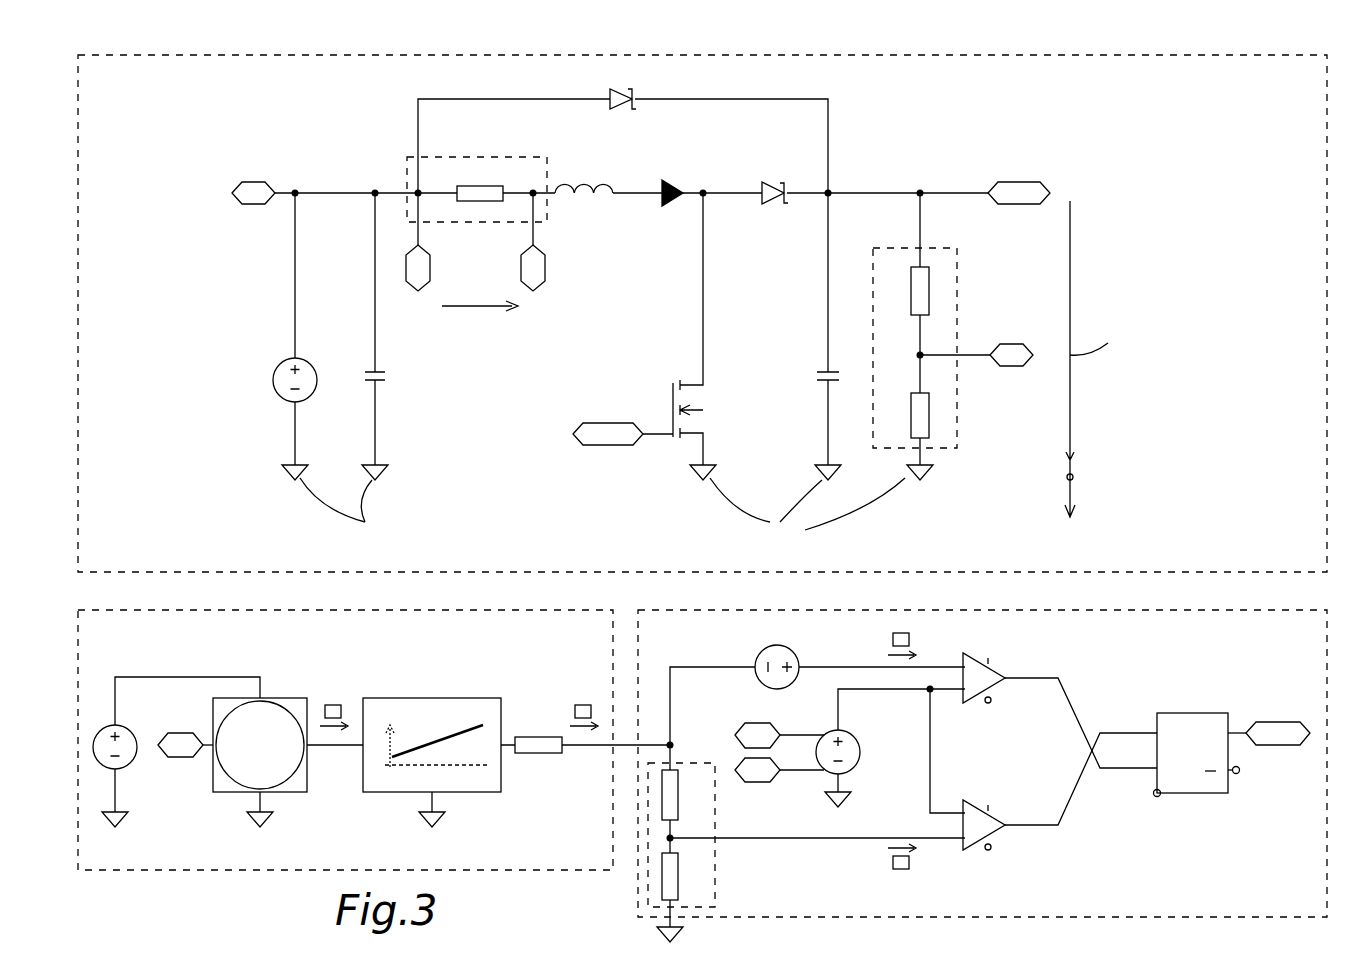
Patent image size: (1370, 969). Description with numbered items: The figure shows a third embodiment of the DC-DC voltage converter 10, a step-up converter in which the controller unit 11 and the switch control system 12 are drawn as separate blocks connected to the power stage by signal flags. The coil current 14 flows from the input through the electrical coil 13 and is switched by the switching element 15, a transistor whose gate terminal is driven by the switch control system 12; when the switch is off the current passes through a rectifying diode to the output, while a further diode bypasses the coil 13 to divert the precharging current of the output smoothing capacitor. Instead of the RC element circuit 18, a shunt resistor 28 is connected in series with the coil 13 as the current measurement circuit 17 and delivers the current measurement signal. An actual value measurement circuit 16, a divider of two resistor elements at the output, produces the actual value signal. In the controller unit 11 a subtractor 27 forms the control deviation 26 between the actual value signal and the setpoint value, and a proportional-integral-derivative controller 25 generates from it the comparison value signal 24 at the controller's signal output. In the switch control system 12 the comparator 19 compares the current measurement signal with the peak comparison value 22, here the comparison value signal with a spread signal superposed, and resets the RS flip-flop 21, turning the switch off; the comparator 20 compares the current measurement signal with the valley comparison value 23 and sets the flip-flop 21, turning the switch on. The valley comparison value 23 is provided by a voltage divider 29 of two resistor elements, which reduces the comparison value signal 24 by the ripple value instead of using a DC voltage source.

The DC-DC voltage converter 10 is at (1260, 572).
The controller unit 11 is at (455, 870).
The switch control system 12 is at (638, 880).
The electrical coil 13 is at (607, 182).
The coil current 14 is at (679, 183).
The switching element 15 is at (698, 384).
The actual value measurement circuit 16 is at (957, 275).
The current measurement circuit 17 is at (484, 204).
The RC element circuit 18 is at (386, 293).
The comparator 19 is at (1000, 668).
The comparator 20 is at (1003, 818).
The RS flip-flop 21 is at (1190, 713).
The peak comparison value 22 is at (893, 640).
The valley comparison value 23 is at (893, 862).
The comparison value signal 24 is at (578, 705).
The PID controller 25 is at (438, 698).
The control deviation 26 is at (336, 705).
The subtractor 27 is at (276, 698).
The shunt resistor 28 is at (505, 188).
The voltage divider 29 is at (715, 855).